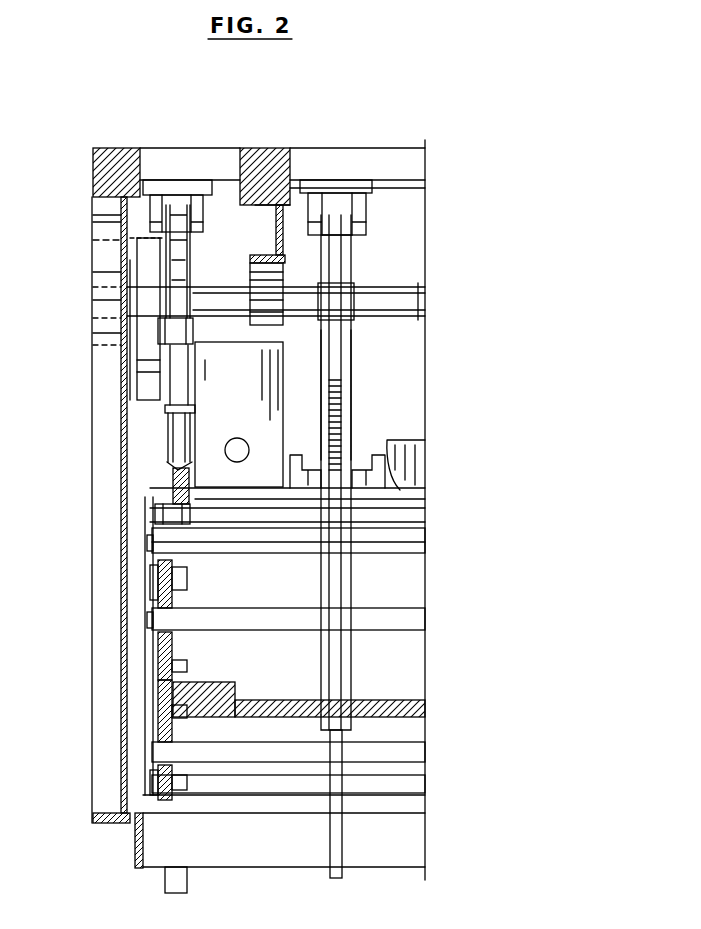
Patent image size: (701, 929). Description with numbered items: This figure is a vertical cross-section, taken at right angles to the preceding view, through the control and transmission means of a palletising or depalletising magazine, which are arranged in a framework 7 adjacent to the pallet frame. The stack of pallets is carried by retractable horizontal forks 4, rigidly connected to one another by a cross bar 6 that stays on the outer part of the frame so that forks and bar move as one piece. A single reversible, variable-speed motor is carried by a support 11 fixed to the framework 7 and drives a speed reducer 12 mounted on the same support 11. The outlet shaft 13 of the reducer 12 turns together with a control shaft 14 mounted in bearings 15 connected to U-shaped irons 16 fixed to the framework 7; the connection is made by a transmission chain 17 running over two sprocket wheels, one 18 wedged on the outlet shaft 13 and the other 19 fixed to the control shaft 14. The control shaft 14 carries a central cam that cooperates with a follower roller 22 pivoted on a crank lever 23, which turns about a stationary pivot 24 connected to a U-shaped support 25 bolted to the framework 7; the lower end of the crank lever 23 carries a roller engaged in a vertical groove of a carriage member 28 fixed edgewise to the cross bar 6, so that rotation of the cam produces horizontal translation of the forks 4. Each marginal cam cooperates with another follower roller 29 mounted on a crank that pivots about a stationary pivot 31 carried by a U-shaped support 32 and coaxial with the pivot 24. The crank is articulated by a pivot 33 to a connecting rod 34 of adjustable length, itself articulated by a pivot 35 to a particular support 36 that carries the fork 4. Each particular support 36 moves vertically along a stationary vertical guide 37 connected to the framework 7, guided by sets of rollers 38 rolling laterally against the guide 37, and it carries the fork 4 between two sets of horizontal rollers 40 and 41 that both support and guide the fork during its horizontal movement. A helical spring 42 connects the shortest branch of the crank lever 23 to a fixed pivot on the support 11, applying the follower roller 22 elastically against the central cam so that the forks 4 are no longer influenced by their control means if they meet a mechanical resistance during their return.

The forks 4 is at (210, 692).
The cross bar 6 is at (405, 700).
The framework 7 is at (386, 172).
The support 11 is at (400, 492).
The speed reducer 12 is at (270, 378).
The outlet shaft 13 is at (160, 397).
The control shaft 14 is at (427, 297).
The bearings 15 is at (250, 270).
The U-shaped irons 16 is at (280, 235).
The transmission chain 17 is at (125, 350).
The sprocket wheel 18 is at (122, 383).
The sprocket wheel 19 is at (125, 248).
The follower roller 22 is at (341, 272).
The crank lever 23 is at (354, 380).
The stationary pivot 24 is at (366, 224).
The U-shaped support 25 is at (366, 206).
The carriage member 28 is at (343, 845).
The follower roller 29 is at (185, 270).
The stationary pivot 31 is at (120, 220).
The U-shaped support 32 is at (200, 206).
The pivot 33 is at (185, 333).
The connecting rod 34 is at (186, 420).
The pivot 35 is at (160, 518).
The particular support 36 is at (150, 645).
The guide 37 is at (152, 503).
The rollers 38 is at (150, 567).
The horizontal rollers 40 is at (178, 656).
The horizontal rollers 41 is at (188, 722).
The helical spring 42 is at (345, 408).